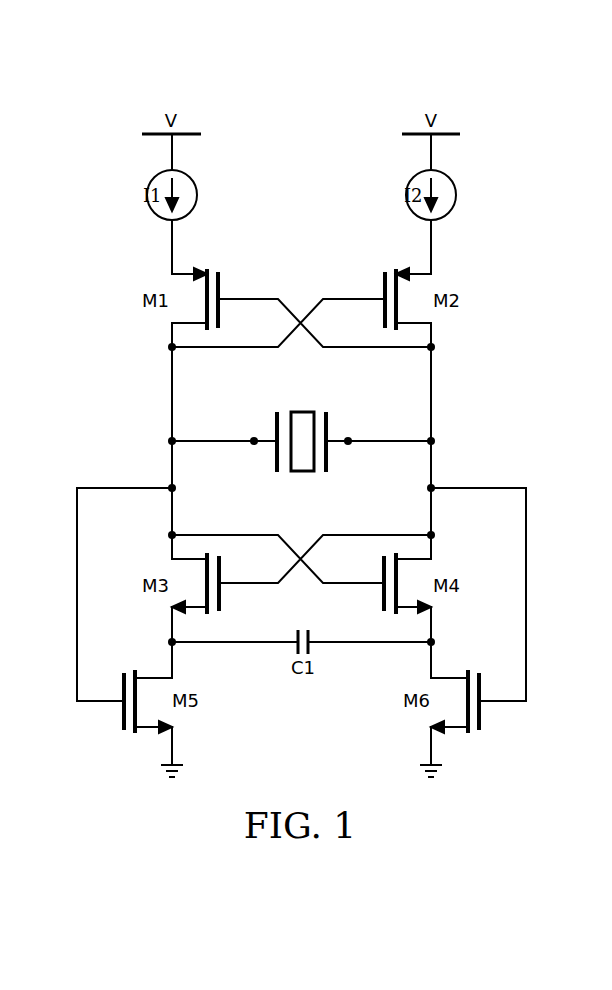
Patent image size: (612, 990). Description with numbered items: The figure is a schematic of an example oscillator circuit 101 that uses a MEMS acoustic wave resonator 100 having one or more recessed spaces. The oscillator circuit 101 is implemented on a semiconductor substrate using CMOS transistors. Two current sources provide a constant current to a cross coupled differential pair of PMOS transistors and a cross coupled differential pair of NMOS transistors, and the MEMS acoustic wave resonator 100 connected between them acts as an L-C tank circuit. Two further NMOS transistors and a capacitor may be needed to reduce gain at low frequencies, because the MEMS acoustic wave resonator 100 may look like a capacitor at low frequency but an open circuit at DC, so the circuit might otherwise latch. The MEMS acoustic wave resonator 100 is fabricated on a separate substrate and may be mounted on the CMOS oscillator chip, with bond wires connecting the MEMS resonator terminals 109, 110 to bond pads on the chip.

The oscillator circuit 101 is at (110, 68).
The MEMS acoustic wave resonator 100 is at (276, 428).
The MEMS resonator terminal 109 is at (255, 447).
The MEMS resonator terminal 110 is at (348, 447).